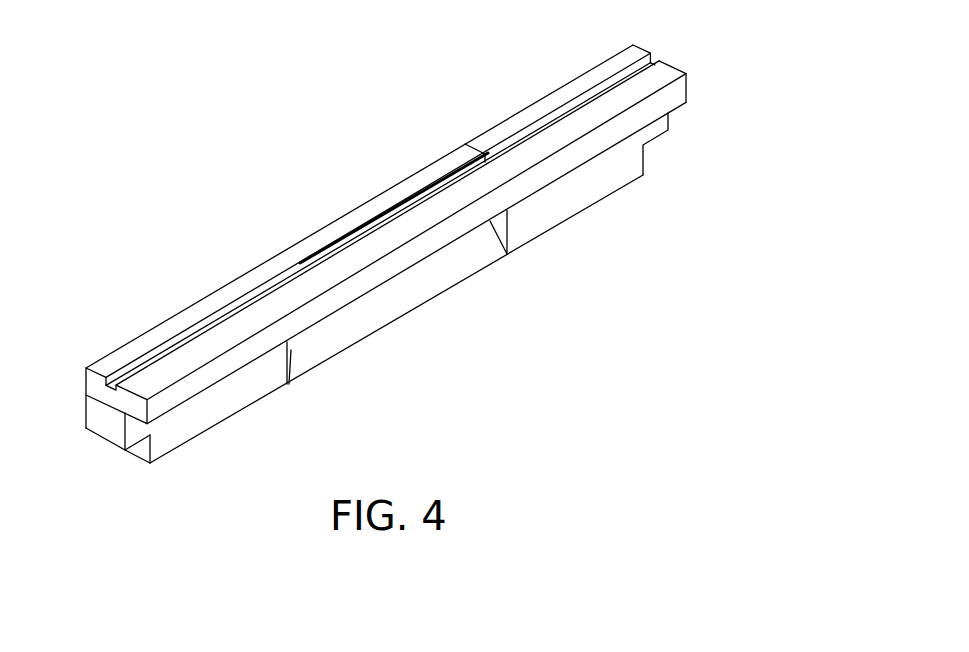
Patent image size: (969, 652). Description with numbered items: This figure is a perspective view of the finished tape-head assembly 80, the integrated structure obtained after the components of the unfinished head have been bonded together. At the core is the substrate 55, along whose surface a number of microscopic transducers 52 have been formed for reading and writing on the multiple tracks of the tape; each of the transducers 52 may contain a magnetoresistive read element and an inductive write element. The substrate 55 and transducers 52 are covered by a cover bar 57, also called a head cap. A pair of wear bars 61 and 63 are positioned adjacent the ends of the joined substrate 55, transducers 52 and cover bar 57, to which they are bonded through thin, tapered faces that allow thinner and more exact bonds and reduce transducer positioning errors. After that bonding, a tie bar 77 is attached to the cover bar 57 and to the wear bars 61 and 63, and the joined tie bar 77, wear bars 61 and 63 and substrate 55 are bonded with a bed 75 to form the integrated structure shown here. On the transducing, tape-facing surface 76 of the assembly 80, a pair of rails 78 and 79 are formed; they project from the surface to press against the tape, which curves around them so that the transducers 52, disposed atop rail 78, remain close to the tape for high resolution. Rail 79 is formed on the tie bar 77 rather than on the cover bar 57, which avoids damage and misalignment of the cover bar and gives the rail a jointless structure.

The assembly 80 is at (226, 129).
The wear bar 63 is at (562, 82).
The substrate 55 is at (290, 240).
The transducing, tape-facing surface 76 is at (212, 296).
The transducers 52 is at (387, 210).
The cover bar 57 is at (463, 182).
The rail 78 is at (138, 360).
The rail 79 is at (660, 62).
The wear bar 61 is at (100, 387).
The bed 75 is at (262, 378).
The tie bar 77 is at (548, 178).